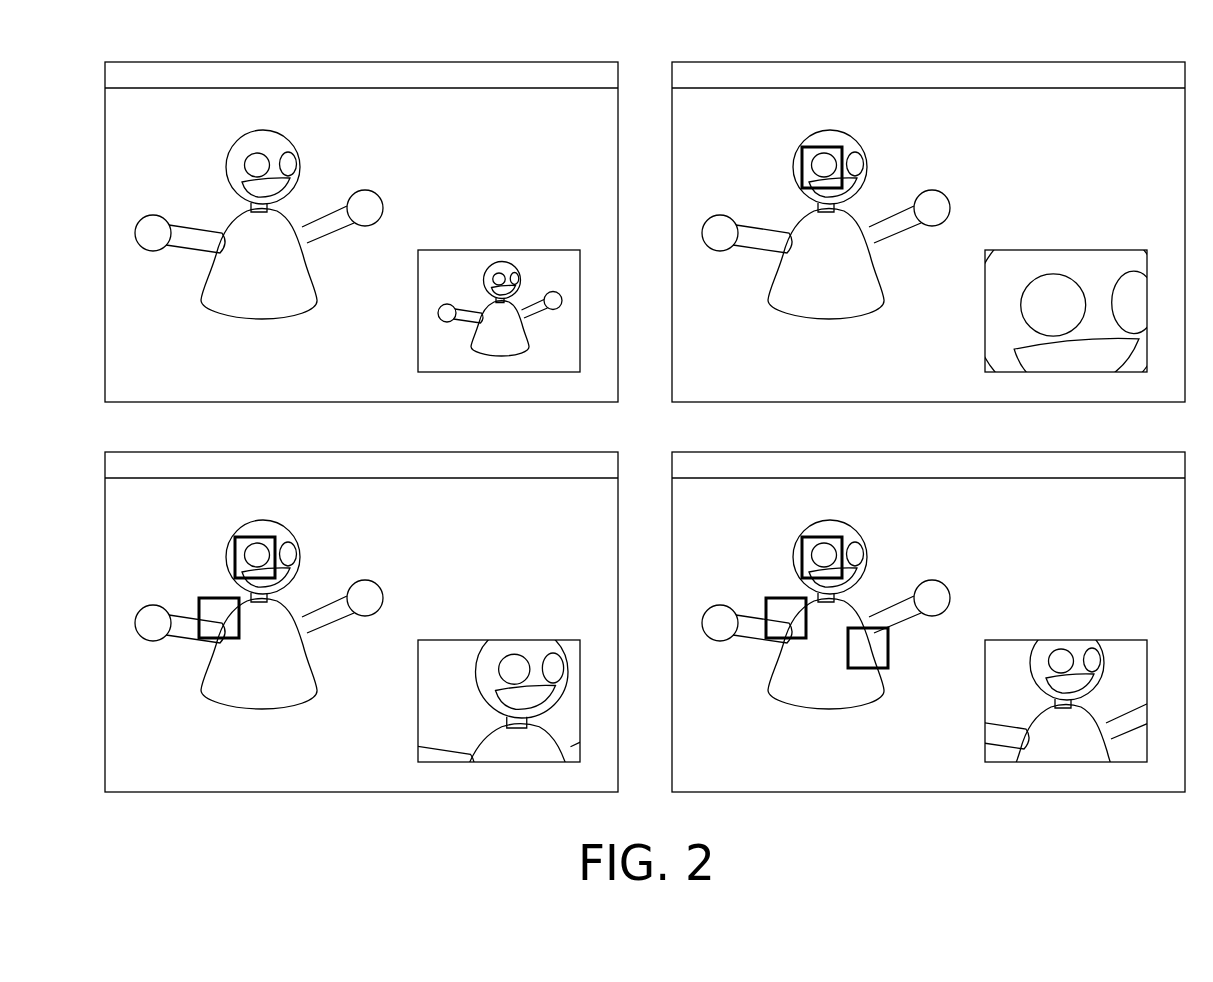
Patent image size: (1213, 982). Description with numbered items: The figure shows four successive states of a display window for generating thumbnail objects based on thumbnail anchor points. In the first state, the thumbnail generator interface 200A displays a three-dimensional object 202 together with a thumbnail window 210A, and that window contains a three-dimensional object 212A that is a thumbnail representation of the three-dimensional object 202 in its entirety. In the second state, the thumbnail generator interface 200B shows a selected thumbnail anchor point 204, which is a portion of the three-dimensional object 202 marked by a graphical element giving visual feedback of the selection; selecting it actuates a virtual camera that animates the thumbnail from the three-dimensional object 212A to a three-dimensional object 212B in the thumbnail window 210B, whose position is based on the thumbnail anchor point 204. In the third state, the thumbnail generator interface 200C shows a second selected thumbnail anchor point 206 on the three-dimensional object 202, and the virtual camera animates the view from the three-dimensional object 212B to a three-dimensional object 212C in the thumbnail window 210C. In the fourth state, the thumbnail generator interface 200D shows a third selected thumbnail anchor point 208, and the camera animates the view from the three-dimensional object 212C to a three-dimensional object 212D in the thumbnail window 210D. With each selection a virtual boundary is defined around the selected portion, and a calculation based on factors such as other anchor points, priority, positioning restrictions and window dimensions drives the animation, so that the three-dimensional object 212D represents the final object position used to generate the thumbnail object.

The thumbnail generator interface 200A is at (146, 62).
The thumbnail generator interface 200B is at (908, 216).
The thumbnail generator interface 200C is at (341, 606).
The thumbnail generator interface 200D is at (908, 606).
The 3D object 202 is at (258, 130).
The thumbnail anchor point 204 is at (235, 168).
The thumbnail anchor point 206 is at (481, 638).
The thumbnail anchor point 208 is at (900, 648).
The thumbnail window 210A is at (533, 250).
The thumbnail window 210B is at (1081, 294).
The thumbnail window 210C is at (514, 684).
The thumbnail window 210D is at (1079, 684).
The 3D object 212A is at (502, 262).
The 3D object 212B is at (974, 459).
The 3D object 212C is at (517, 734).
The 3D object 212D is at (1063, 708).